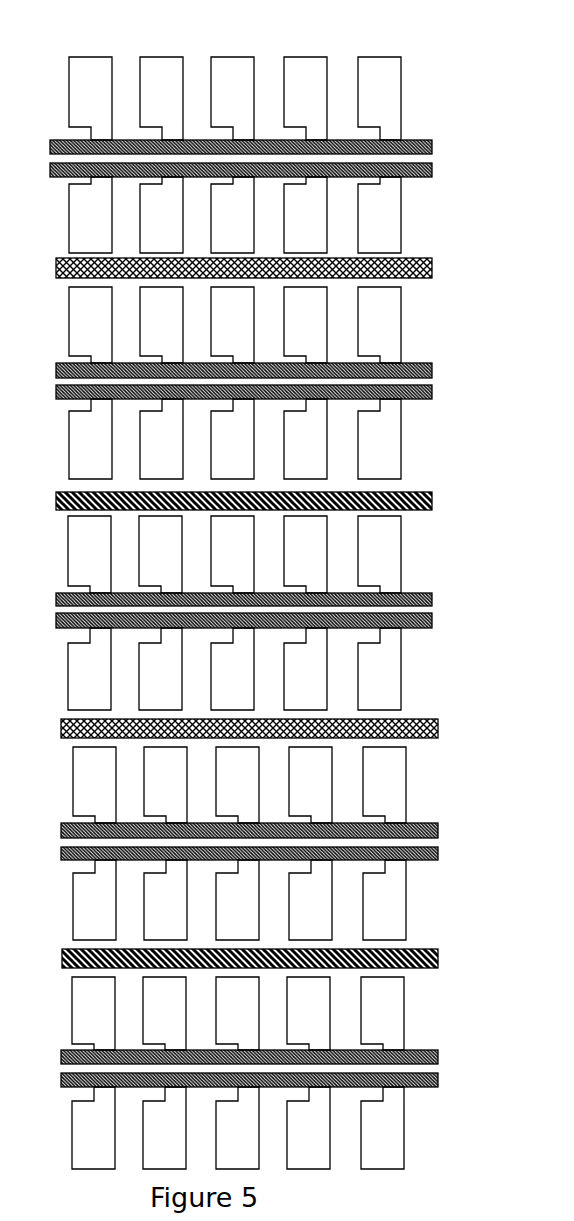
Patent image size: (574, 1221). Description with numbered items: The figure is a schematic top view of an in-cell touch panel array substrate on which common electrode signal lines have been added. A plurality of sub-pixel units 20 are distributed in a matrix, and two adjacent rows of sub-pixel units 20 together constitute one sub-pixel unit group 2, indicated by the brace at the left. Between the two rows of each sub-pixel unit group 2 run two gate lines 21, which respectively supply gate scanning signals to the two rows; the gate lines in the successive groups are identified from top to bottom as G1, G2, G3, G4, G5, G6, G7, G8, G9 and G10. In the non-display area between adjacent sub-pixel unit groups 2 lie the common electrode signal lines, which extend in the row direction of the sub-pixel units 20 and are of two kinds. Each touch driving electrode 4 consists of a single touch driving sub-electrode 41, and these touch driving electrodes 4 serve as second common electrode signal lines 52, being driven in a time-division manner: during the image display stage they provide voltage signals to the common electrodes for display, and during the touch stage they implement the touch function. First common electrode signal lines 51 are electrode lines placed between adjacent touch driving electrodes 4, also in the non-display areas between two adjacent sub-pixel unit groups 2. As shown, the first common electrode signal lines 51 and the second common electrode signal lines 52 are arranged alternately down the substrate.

The sub-pixel unit group 2 is at (70, 57).
The sub-pixel unit 20 is at (379, 77).
The gate line 21 is at (431, 177).
The touch driving electrode 4 is at (277, 510).
The touch driving sub-electrode 41 is at (277, 510).
The second common electrode signal line 52 is at (473, 770).
The first common electrode signal line 51 is at (424, 510).
The gate line G1 is at (256, 147).
The gate line G2 is at (256, 171).
The gate line G3 is at (259, 370).
The gate line G4 is at (259, 393).
The gate line G5 is at (259, 600).
The gate line G6 is at (259, 622).
The gate line G7 is at (264, 830).
The gate line G8 is at (264, 853).
The gate line G9 is at (264, 1058).
The gate line G10 is at (269, 1080).